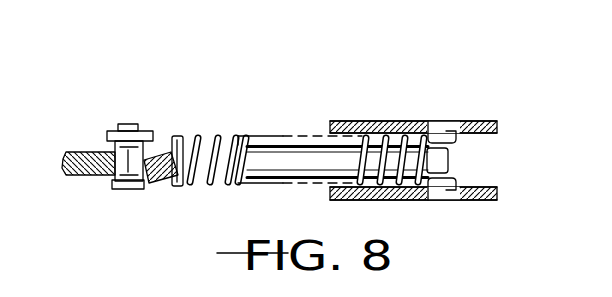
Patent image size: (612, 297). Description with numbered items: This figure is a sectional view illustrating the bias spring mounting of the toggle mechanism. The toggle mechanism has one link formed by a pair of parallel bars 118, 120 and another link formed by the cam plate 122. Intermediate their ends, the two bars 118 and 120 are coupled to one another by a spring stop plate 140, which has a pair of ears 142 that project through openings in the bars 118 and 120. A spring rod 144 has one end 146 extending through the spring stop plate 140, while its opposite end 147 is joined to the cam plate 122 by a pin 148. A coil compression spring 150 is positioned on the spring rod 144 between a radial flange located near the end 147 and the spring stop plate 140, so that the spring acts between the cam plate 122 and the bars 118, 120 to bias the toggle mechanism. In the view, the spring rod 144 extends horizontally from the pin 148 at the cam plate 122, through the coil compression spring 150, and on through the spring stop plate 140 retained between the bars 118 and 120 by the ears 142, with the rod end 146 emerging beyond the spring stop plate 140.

The bar 118 is at (362, 120).
The bar 120 is at (395, 200).
The cam plate 122 is at (77, 150).
The spring stop plate 140 is at (423, 120).
The ears 142 is at (445, 120).
The spring rod 144 is at (285, 135).
The end of spring rod 146 is at (448, 162).
The opposite end of spring rod 147 is at (158, 186).
The pin 148 is at (130, 190).
The coil compression spring 150 is at (212, 136).